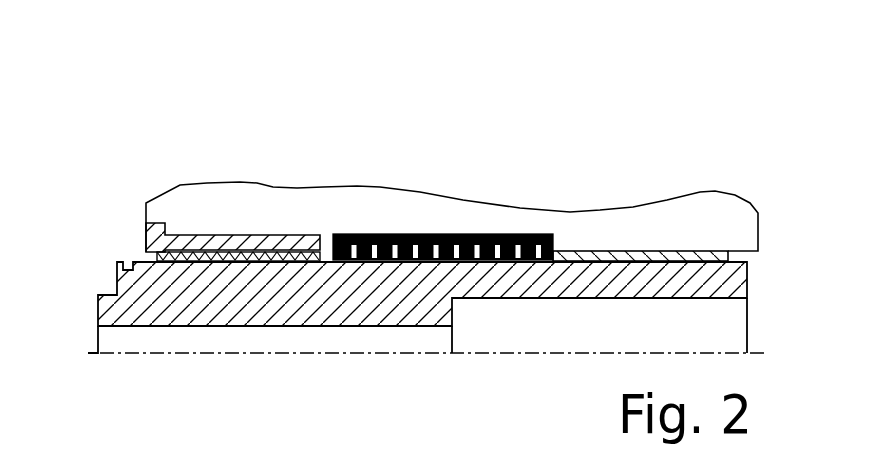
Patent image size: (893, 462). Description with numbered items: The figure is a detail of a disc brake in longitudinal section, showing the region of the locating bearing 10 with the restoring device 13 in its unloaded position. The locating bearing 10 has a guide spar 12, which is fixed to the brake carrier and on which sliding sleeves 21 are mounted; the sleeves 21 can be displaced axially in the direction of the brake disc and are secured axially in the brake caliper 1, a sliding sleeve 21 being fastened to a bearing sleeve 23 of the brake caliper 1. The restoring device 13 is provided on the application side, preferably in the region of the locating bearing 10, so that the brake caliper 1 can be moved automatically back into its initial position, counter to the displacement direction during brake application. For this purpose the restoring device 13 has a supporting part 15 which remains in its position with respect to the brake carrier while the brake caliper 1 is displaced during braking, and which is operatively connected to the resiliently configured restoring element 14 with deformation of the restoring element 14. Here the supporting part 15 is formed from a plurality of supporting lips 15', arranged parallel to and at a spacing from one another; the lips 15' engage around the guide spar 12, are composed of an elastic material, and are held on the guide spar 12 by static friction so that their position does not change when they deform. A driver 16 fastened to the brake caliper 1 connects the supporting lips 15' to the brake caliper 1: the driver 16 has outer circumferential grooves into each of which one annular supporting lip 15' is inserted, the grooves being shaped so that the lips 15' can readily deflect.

The brake caliper 1 is at (220, 205).
The locating bearing 10 is at (100, 244).
The guide spar 12 is at (120, 308).
The restoring device 13 is at (556, 245).
The restoring element 14 is at (376, 222).
The supporting part 15 is at (499, 334).
The supporting lips 15' is at (403, 347).
The driver 16 is at (471, 237).
The sliding sleeves 21 is at (196, 258).
The bearing sleeve 23 is at (278, 243).